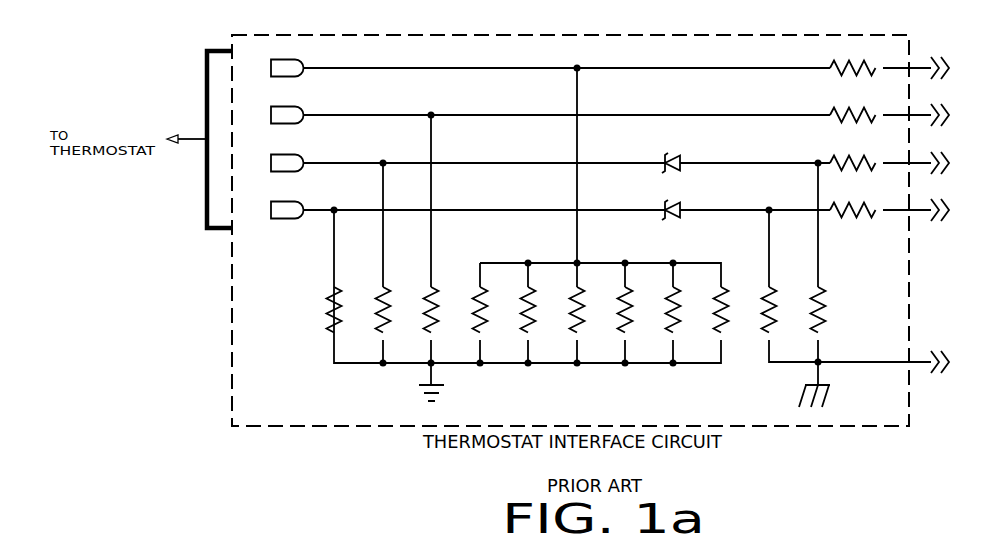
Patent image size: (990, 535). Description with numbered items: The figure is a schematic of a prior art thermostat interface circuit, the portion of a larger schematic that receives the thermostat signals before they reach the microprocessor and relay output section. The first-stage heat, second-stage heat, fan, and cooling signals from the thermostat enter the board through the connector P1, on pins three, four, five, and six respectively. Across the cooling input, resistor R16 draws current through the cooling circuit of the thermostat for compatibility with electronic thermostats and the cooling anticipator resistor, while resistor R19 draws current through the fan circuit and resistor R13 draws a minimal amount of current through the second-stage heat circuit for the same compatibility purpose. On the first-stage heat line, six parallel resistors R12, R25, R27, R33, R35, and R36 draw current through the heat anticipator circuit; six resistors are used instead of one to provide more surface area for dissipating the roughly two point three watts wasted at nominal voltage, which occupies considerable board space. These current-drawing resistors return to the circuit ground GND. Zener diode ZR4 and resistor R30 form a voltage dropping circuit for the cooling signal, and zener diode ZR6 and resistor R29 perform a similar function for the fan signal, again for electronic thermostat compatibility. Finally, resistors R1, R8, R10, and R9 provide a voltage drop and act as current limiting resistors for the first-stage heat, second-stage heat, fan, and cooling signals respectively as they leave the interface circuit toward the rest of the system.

The connector P1 is at (275, 132).
The resistor R1 is at (853, 59).
The resistor R8 is at (853, 106).
The resistor R10 is at (853, 154).
The resistor R9 is at (853, 201).
The zener diode ZR6 is at (655, 156).
The zener diode ZR4 is at (655, 204).
The resistor R16 is at (320, 305).
The resistor R19 is at (369, 321).
The resistor R13 is at (417, 305).
The resistor R12 is at (465, 321).
The resistor R25 is at (513, 305).
The resistor R27 is at (564, 321).
The resistor R33 is at (610, 305).
The resistor R35 is at (659, 321).
The resistor R36 is at (706, 305).
The resistor R29 is at (803, 305).
The resistor R30 is at (755, 321).
The ground GND is at (847, 395).